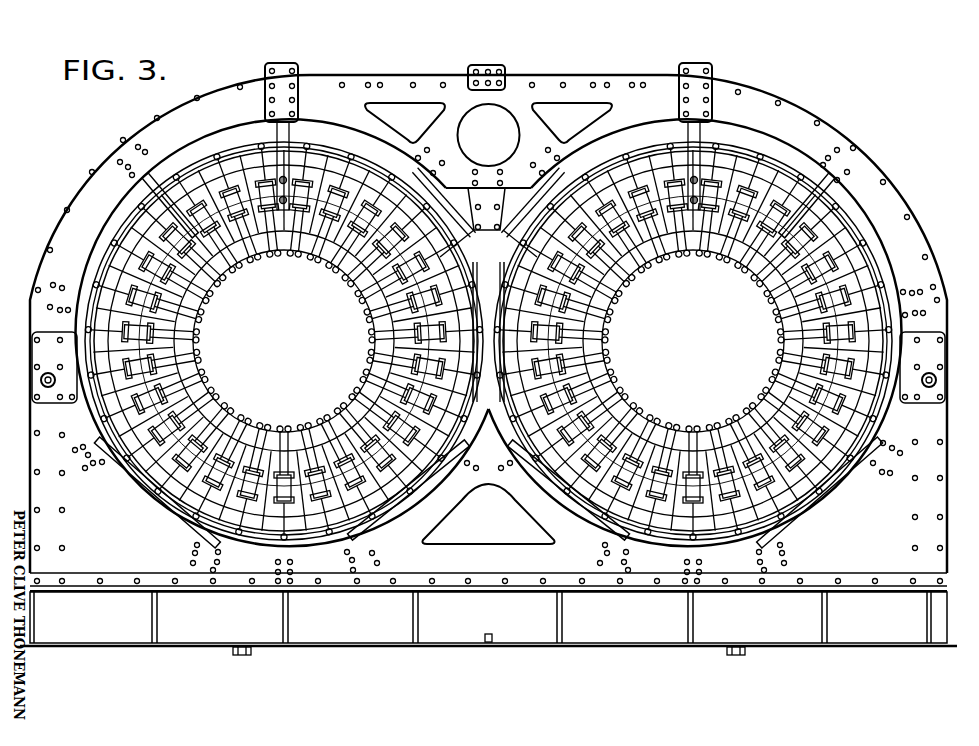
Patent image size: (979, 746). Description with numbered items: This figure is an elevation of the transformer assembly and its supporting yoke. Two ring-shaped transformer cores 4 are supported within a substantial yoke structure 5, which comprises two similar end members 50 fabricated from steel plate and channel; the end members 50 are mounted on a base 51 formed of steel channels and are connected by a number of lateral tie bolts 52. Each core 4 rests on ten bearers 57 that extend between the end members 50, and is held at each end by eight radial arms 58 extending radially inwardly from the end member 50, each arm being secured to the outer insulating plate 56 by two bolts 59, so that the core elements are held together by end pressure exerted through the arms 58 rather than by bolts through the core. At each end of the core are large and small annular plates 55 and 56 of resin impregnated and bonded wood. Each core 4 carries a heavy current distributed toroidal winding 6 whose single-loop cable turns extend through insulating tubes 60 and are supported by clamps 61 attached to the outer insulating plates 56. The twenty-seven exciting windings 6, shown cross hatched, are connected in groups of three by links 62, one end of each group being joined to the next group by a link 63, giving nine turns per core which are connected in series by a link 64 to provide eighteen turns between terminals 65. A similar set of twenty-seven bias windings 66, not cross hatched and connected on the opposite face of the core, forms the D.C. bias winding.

The transformer core 4 is at (240, 170).
The yoke structure 5 is at (824, 119).
The toroidal winding 6 is at (317, 260).
The end member 50 is at (103, 166).
The base 51 is at (366, 630).
The lateral tie bolt 52 is at (48, 388).
The large annular plate 55 is at (207, 183).
The small annular plate 56 is at (160, 243).
The bearer 57 is at (510, 440).
The radial arm 58 is at (286, 140).
The bolt 59 is at (203, 303).
The insulating tube 60 is at (250, 422).
The clamp 61 is at (402, 270).
The link 62 is at (113, 270).
The link 63 is at (168, 177).
The link 64 is at (487, 386).
The terminal 65 is at (500, 221).
The bias winding 66 is at (347, 407).